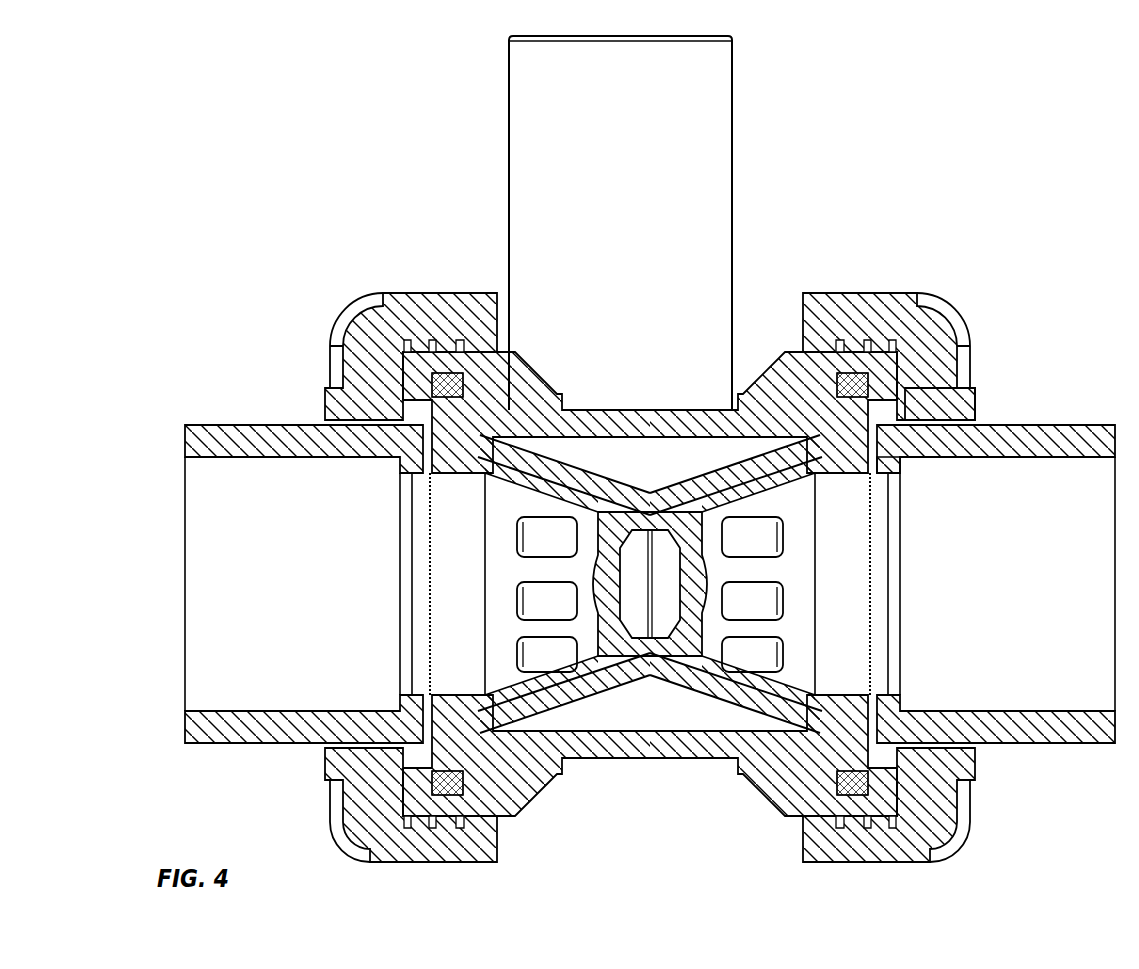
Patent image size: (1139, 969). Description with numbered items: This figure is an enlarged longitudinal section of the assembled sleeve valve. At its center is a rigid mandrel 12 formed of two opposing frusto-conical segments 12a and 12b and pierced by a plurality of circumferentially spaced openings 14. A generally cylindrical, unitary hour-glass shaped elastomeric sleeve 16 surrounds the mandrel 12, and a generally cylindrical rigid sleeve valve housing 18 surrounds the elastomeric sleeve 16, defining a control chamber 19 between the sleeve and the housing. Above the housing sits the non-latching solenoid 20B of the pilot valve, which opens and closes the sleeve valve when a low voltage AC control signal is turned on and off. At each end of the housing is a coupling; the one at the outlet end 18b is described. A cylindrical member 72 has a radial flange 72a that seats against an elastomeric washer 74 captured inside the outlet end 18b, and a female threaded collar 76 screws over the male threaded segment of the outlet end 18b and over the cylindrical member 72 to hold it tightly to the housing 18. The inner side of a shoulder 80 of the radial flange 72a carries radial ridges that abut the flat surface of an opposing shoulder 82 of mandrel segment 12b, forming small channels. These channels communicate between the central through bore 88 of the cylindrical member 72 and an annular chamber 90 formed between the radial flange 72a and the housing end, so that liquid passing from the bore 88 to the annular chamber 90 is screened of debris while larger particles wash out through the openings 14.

The rigid mandrel 12 is at (606, 672).
The frusto-conical segment 12a is at (557, 488).
The frusto-conical segment 12b is at (737, 488).
The openings 14 is at (765, 605).
The elastomeric sleeve 16 is at (480, 722).
The sleeve valve housing 18 is at (625, 758).
The outlet end 18b is at (898, 358).
The control chamber 19 is at (664, 477).
The non-latching solenoid 20B is at (732, 178).
The cylindrical member 72 is at (1050, 428).
The radial flange 72a is at (898, 405).
The elastomeric washer 74 is at (850, 378).
The female threaded collar 76 is at (858, 842).
The shoulder 80 is at (903, 460).
The shoulder 82 is at (827, 703).
The central through bore 88 is at (1034, 586).
The annular chamber 90 is at (890, 740).